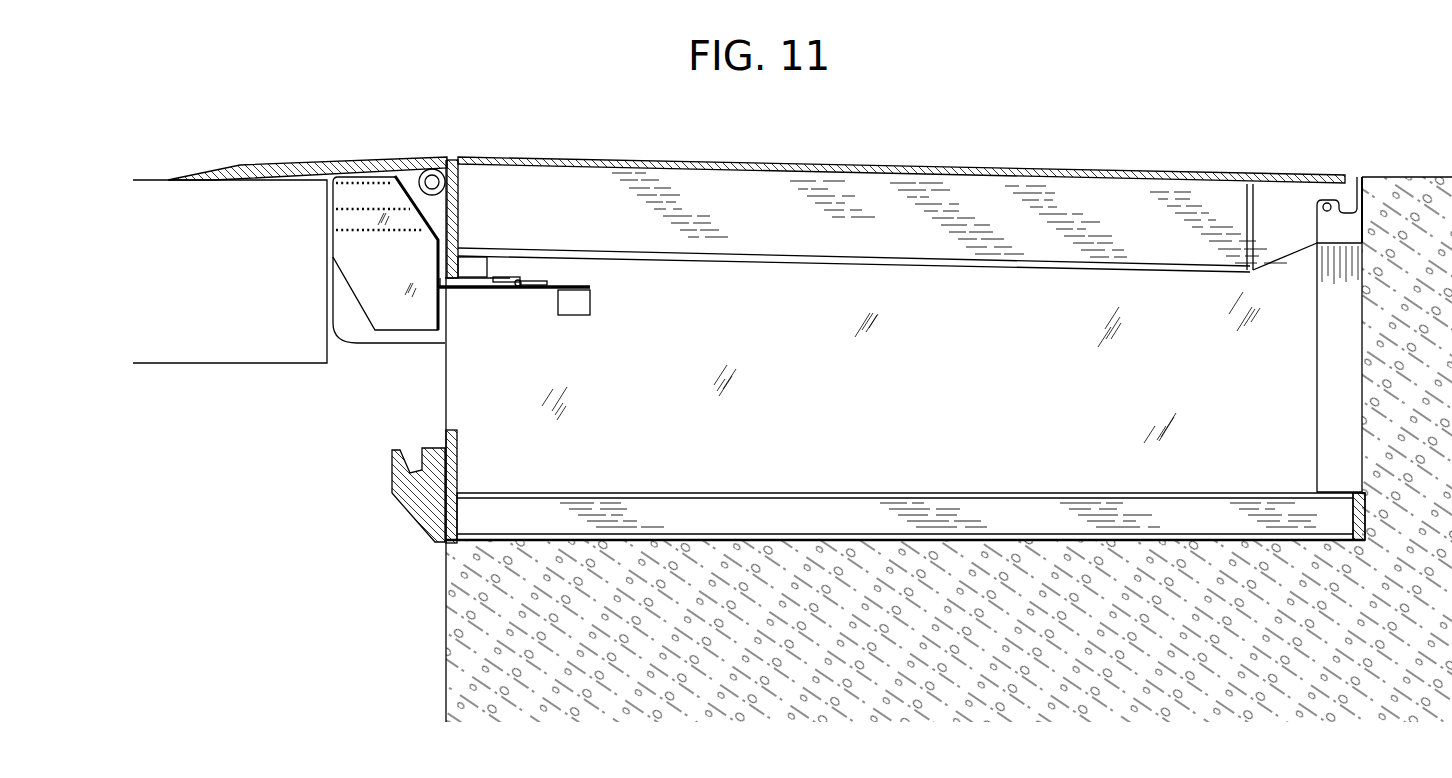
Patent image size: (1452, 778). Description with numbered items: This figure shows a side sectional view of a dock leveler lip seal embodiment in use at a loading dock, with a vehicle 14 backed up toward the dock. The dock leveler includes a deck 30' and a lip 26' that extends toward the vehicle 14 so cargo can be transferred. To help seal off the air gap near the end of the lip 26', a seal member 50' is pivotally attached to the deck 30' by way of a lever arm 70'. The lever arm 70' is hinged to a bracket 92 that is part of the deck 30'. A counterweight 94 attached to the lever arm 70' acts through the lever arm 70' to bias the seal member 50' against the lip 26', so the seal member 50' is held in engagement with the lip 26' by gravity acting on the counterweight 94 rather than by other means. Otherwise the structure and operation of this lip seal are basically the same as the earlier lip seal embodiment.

The vehicle 14 is at (235, 363).
The lip 26' is at (307, 132).
The deck 30' is at (901, 194).
The seal member 50' is at (389, 301).
The lever arm 70' is at (514, 332).
The bracket 92 is at (488, 257).
The counterweight 94 is at (577, 316).